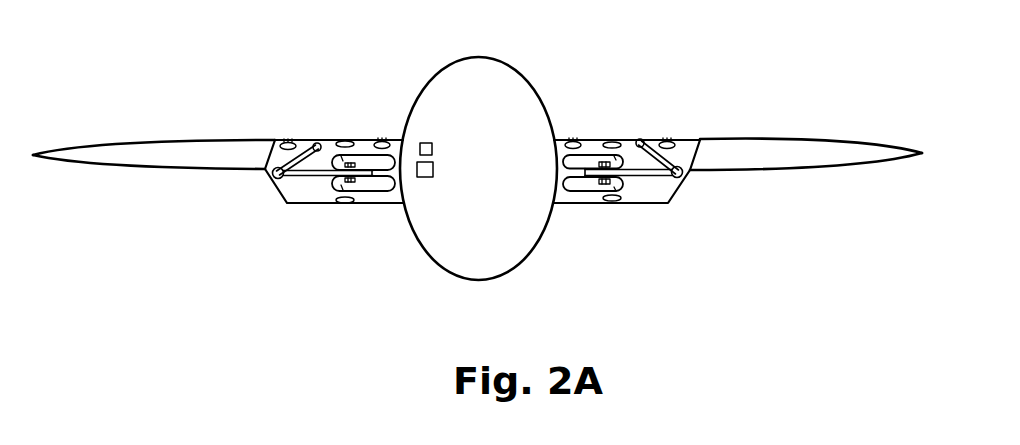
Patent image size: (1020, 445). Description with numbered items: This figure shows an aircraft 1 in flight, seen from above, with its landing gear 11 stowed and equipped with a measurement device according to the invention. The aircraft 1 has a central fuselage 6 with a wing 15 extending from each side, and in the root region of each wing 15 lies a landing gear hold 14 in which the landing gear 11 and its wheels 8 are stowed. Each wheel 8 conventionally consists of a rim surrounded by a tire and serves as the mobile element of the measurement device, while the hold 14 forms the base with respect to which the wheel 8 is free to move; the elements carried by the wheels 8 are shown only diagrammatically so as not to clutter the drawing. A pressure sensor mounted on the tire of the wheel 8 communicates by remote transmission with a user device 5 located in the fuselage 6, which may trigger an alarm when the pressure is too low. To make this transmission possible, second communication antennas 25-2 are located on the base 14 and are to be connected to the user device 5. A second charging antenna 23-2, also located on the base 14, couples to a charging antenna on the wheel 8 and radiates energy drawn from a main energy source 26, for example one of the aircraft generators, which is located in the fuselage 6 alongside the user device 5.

The aircraft 1 is at (557, 64).
The user device 5 is at (425, 143).
The aircraft fuselage 6 is at (547, 243).
The aircraft wheel 8 is at (580, 187).
The landing gear 11 is at (648, 173).
The landing gear hold 14 is at (670, 188).
The wing 15 is at (765, 162).
The second charging antenna 23-2 is at (338, 140).
The second communication antenna 25-2 is at (283, 140).
The main energy source 26 is at (433, 170).